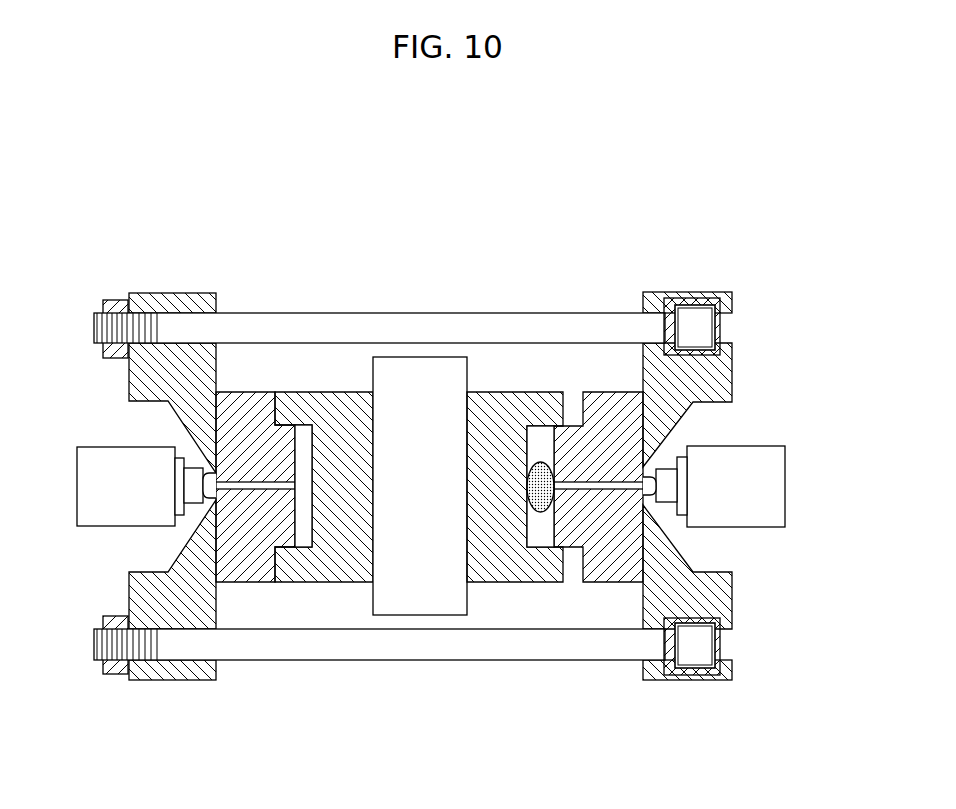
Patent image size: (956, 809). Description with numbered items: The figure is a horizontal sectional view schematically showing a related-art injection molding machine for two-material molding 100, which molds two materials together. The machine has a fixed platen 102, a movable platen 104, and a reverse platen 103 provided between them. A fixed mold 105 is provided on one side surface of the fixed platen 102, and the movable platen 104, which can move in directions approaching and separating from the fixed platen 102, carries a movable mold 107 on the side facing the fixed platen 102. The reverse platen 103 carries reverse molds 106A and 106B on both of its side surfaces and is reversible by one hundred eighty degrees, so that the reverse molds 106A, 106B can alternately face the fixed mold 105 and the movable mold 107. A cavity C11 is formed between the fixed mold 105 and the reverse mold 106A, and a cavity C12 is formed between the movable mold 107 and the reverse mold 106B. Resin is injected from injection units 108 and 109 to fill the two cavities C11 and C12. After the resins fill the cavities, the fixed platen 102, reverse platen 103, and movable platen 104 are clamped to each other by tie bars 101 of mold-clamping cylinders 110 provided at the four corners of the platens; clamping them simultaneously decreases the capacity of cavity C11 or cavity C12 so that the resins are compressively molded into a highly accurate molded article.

The injection molding machine for two-material molding 100 is at (570, 302).
The tie bar 101 is at (242, 312).
The fixed platen 102 is at (688, 292).
The reverse platen 103 is at (418, 357).
The movable platen 104 is at (170, 293).
The fixed mold 105 is at (613, 392).
The reverse mold 106A is at (497, 392).
The reverse mold 106B is at (338, 392).
The movable mold 107 is at (246, 392).
The injection unit 108 is at (755, 446).
The injection unit 109 is at (104, 447).
The mold-clamping cylinder 110 is at (720, 325).
The cavity C11 is at (543, 540).
The cavity C12 is at (302, 545).